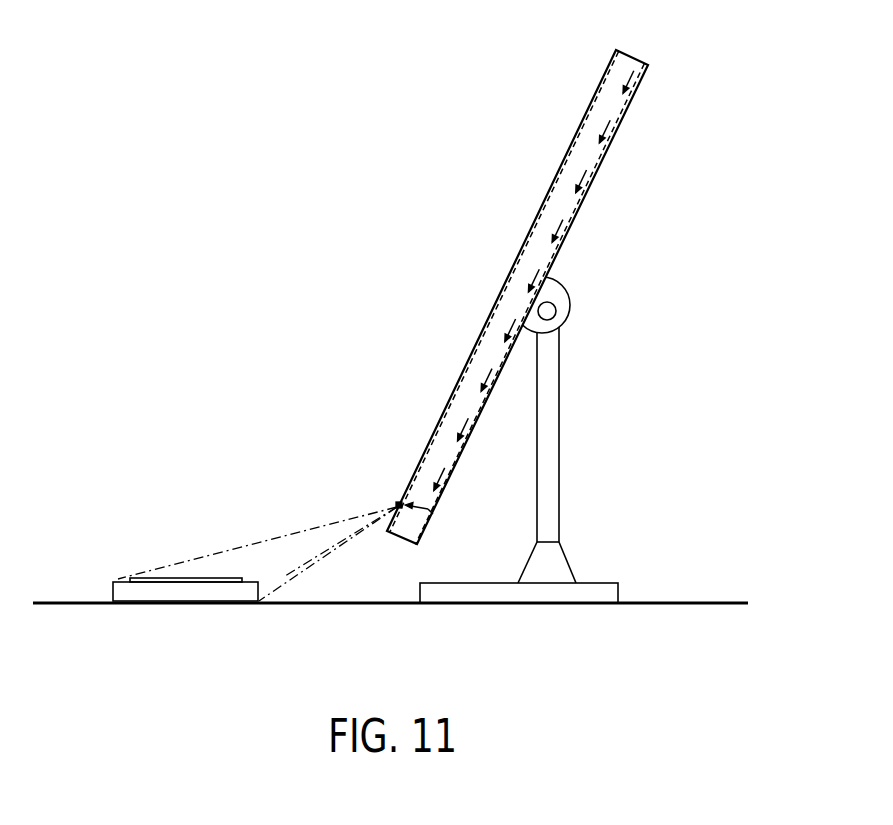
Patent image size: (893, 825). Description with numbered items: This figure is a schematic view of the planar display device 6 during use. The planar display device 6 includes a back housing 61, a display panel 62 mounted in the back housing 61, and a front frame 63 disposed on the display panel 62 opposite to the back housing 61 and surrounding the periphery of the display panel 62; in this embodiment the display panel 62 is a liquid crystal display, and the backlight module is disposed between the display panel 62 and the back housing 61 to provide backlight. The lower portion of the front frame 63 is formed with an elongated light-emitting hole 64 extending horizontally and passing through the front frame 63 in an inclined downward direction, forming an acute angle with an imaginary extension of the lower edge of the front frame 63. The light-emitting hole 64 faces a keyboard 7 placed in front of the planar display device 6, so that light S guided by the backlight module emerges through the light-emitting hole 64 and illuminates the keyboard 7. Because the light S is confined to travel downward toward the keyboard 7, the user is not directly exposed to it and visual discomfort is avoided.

The planar display device 6 is at (633, 138).
The back housing 61 is at (569, 233).
The display panel 62 is at (592, 100).
The front frame 63 is at (615, 55).
The light-emitting hole 64 is at (396, 505).
The keyboard 7 is at (197, 578).
The light S is at (255, 564).